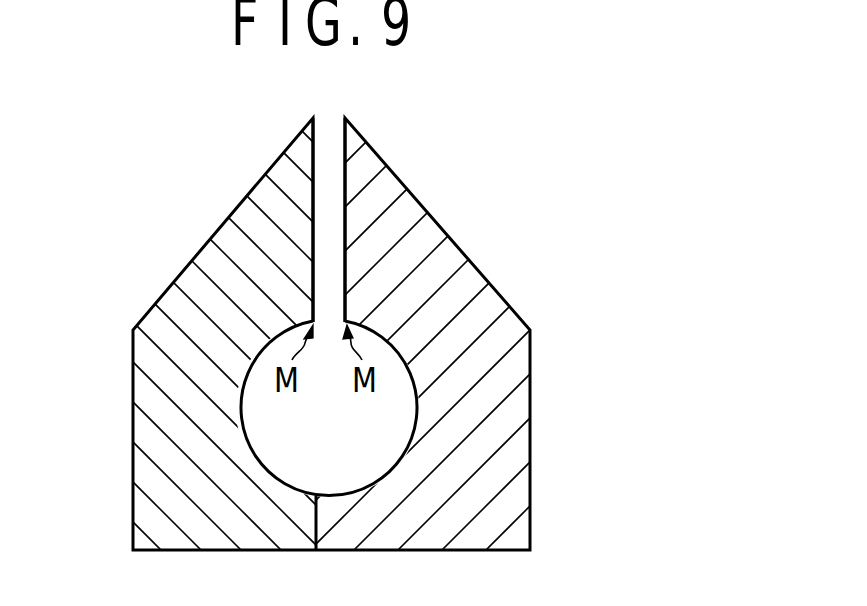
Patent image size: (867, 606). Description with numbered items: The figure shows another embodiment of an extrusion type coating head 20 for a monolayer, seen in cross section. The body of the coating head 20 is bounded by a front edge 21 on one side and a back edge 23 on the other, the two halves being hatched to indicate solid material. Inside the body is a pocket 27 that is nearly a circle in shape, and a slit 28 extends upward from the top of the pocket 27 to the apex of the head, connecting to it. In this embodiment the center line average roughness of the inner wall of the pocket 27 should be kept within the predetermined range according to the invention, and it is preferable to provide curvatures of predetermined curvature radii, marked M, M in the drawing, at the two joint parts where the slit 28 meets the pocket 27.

The extrusion type coating head 20 is at (519, 143).
The front edge 21 is at (150, 383).
The back edge 23 is at (507, 327).
The pocket 27 is at (388, 420).
The slit 28 is at (330, 198).